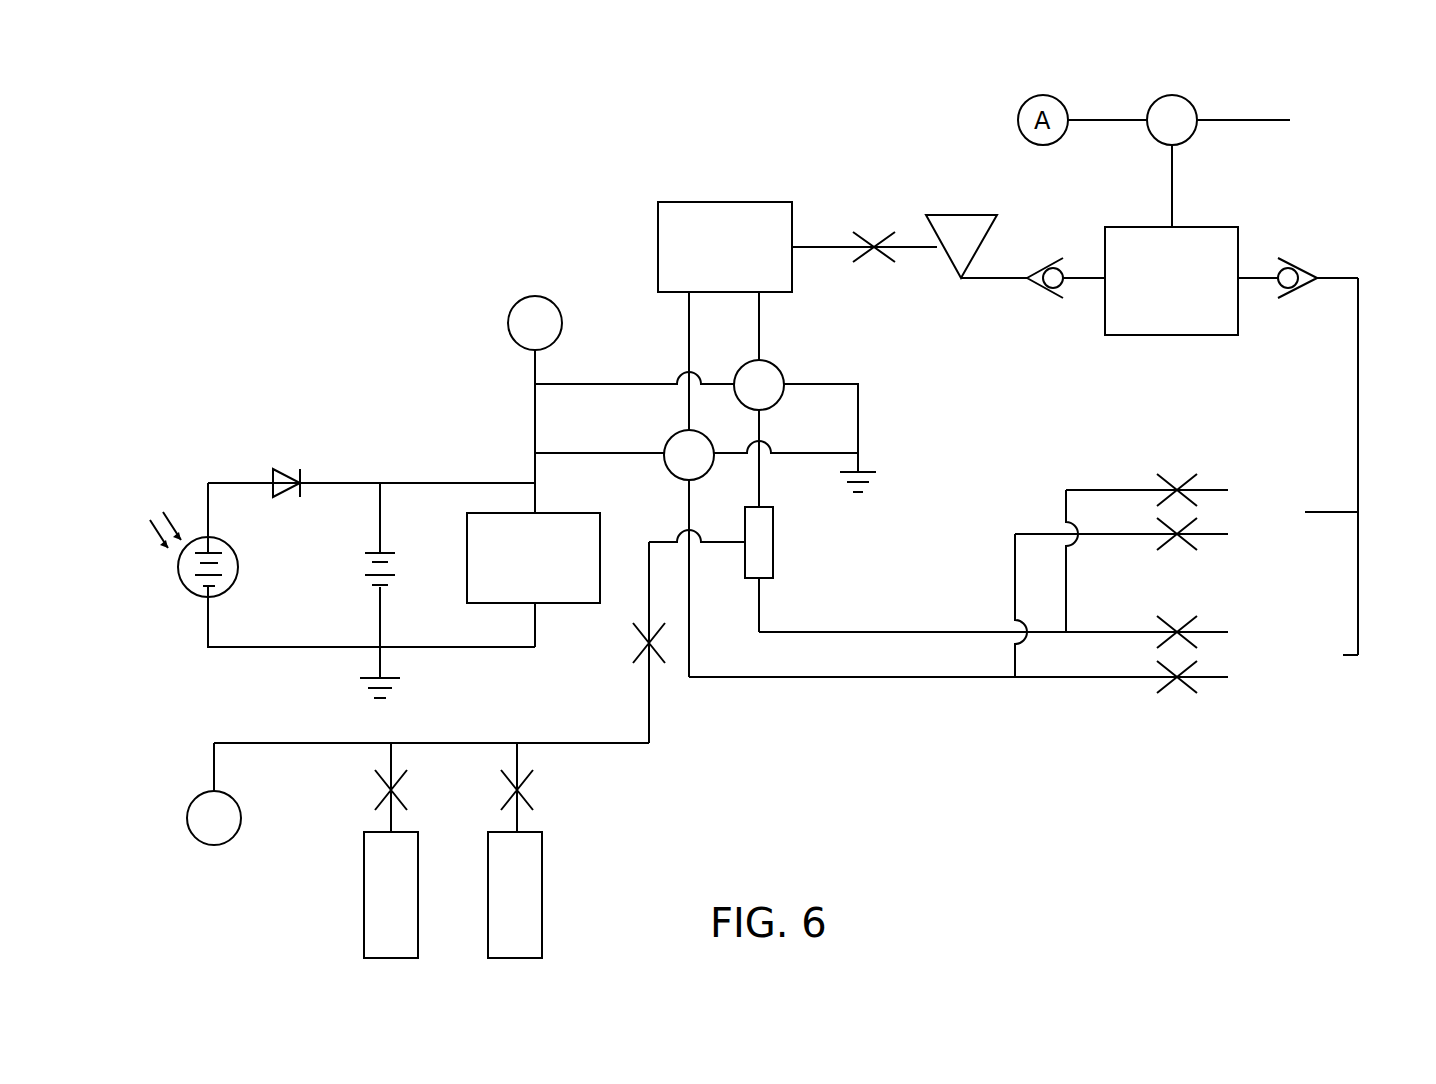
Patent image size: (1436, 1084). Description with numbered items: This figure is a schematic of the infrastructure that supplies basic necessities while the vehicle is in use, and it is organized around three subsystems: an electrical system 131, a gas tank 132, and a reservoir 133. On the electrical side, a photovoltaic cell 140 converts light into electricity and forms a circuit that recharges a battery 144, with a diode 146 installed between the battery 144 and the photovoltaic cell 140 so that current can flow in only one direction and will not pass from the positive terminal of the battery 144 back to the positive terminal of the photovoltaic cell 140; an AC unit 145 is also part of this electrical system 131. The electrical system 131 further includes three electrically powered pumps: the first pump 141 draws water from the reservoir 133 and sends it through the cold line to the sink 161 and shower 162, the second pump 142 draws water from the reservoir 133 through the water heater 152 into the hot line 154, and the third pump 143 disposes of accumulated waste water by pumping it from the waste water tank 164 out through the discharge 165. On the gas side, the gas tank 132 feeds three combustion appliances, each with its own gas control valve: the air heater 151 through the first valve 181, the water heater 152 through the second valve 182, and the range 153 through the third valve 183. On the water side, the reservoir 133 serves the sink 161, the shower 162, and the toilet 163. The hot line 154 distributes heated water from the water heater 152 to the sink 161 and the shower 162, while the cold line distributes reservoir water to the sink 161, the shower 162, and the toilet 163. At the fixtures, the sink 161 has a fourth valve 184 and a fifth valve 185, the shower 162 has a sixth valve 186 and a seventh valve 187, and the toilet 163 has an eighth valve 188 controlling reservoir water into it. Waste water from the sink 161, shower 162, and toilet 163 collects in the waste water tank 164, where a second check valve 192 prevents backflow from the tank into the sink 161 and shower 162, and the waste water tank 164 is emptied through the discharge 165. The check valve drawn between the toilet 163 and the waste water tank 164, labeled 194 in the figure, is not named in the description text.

The electrical system 131 is at (250, 452).
The gas tank 132 is at (214, 845).
The reservoir 133 is at (724, 200).
The photovoltaic cell 140 is at (185, 588).
The first pump 141 is at (672, 438).
The second pump 142 is at (777, 362).
The third pump 143 is at (1172, 95).
The battery 144 is at (362, 573).
The AC unit 145 is at (600, 555).
The diode 146 is at (283, 467).
The air heater 151 is at (363, 913).
The water heater 152 is at (773, 540).
The range 153 is at (898, 680).
The hot line 154 is at (915, 630).
The sink 161 is at (1267, 490).
The shower 162 is at (1280, 673).
The toilet 163 is at (960, 212).
The waste water tank 164 is at (1192, 227).
The discharge 165 is at (1334, 108).
The first valve 181 is at (385, 790).
The second valve 182 is at (637, 642).
The third valve 183 is at (525, 792).
The fourth valve 184 is at (1175, 473).
The fifth valve 185 is at (1175, 552).
The sixth valve 186 is at (1177, 617).
The seventh valve 187 is at (1177, 692).
The eighth valve 188 is at (875, 233).
The second check valve 192 is at (1297, 258).
The check valve 194 is at (1045, 293).